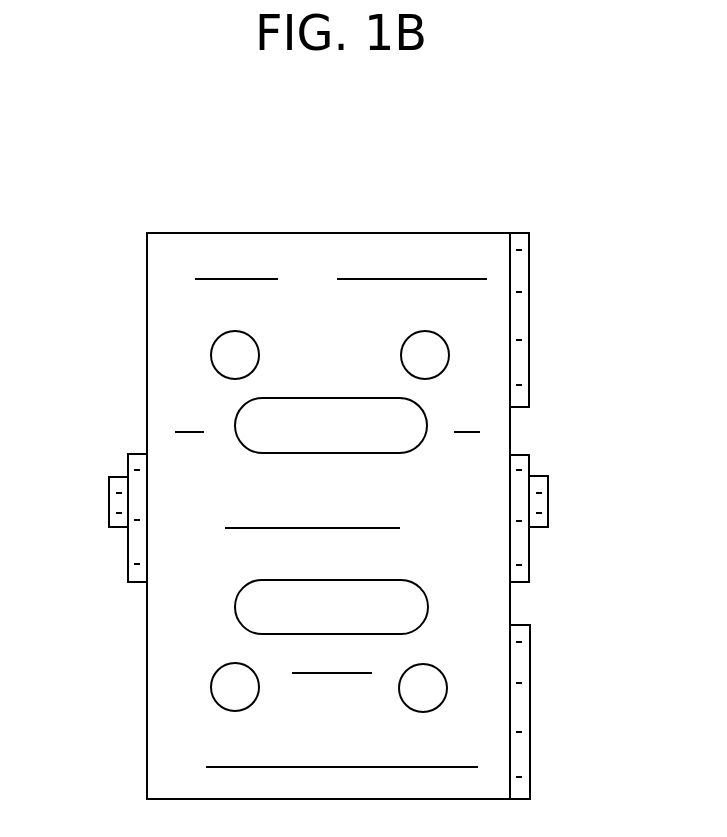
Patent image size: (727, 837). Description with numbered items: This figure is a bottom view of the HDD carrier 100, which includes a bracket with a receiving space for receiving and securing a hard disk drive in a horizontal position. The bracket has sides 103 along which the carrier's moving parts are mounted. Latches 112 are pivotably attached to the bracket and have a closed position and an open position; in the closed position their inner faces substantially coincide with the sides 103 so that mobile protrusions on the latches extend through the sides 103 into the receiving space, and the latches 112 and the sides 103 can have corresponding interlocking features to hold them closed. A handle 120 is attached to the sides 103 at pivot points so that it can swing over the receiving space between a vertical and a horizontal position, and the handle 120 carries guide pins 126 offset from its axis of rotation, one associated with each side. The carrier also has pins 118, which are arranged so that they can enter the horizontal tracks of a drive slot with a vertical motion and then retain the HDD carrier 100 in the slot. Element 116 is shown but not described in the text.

The HDD carrier 100 is at (140, 183).
The sides of bracket 103 is at (522, 432).
The latches 112 is at (537, 335).
The front surface 116 is at (387, 263).
The pins 118 is at (385, 350).
The handle 120 is at (125, 565).
The guide pins 126 is at (105, 510).